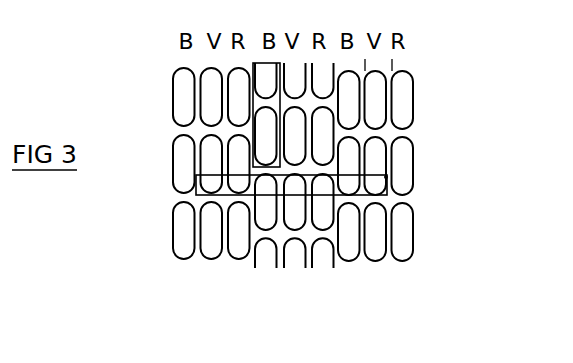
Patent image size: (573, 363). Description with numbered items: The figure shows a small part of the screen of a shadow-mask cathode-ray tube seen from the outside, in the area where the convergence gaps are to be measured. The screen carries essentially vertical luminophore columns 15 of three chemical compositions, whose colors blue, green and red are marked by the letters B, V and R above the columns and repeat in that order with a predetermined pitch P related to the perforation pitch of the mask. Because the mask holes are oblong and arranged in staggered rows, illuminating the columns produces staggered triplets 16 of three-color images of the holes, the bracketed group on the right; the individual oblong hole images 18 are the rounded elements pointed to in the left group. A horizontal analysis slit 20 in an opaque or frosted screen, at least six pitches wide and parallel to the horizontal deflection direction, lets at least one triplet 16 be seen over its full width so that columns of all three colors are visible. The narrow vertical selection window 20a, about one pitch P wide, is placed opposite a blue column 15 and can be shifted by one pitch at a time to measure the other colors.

The luminophore columns 15 is at (305, 264).
The triplets 16 is at (412, 262).
The phosphor elements (upper rows) 18 is at (217, 110).
The analysis slit 20 is at (196, 192).
The selection window 20a is at (252, 66).
The pitch P is at (352, 64).